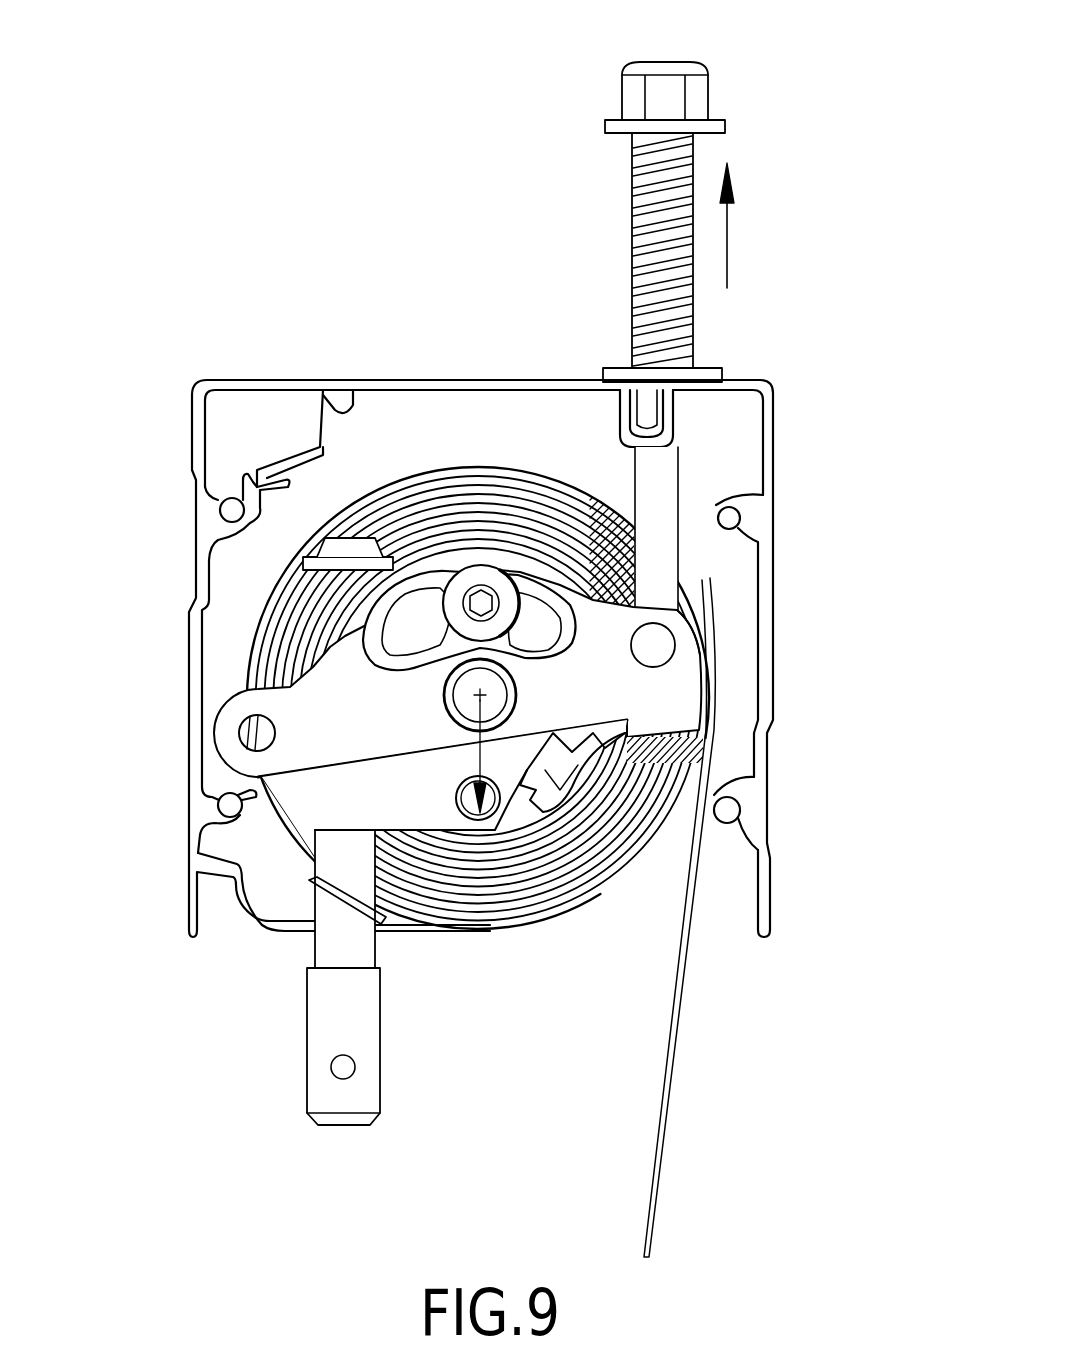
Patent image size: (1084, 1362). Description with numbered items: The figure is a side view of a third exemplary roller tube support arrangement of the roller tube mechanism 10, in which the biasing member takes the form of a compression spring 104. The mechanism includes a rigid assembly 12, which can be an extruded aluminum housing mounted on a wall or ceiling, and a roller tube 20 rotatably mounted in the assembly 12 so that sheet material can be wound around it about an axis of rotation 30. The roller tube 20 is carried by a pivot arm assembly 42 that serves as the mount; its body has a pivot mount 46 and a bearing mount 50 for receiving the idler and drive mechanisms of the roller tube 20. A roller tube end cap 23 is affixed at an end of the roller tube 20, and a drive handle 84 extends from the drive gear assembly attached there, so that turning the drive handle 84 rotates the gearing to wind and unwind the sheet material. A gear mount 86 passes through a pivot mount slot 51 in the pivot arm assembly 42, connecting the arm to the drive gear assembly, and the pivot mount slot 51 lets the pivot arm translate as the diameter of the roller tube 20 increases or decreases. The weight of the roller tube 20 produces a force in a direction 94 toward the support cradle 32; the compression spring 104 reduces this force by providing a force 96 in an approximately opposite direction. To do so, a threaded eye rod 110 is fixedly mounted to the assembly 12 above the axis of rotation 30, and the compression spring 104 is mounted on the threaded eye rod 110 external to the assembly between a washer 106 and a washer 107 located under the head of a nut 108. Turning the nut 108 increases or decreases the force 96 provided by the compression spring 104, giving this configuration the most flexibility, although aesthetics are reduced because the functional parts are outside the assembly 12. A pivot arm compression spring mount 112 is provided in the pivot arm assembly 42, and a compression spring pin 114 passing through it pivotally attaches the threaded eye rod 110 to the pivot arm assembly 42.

The roller tube mechanism 10 is at (241, 290).
The assembly 12 is at (775, 434).
The roller tube 20 is at (444, 684).
The roller tube end cap 23 is at (550, 795).
The axis of rotation 30 is at (463, 710).
The support cradle 32 is at (471, 930).
The pivot arm assembly 42 is at (345, 640).
The pivot mount 46 is at (245, 742).
The bearing mount 50 is at (520, 710).
The pivot mount slot 51 is at (437, 575).
The drive handle 84 is at (310, 1045).
The gear mount 86 is at (480, 565).
The direction towards the support cradle 94 is at (470, 753).
The opposite direction force 96 is at (733, 246).
The compression spring 104 is at (625, 200).
The washer 106 is at (610, 367).
The washer 107 is at (607, 124).
The nut 108 is at (622, 92).
The threaded eye rod 110 is at (683, 427).
The pivot arm compression spring mount 112 is at (655, 647).
The compression spring pin 114 is at (632, 630).